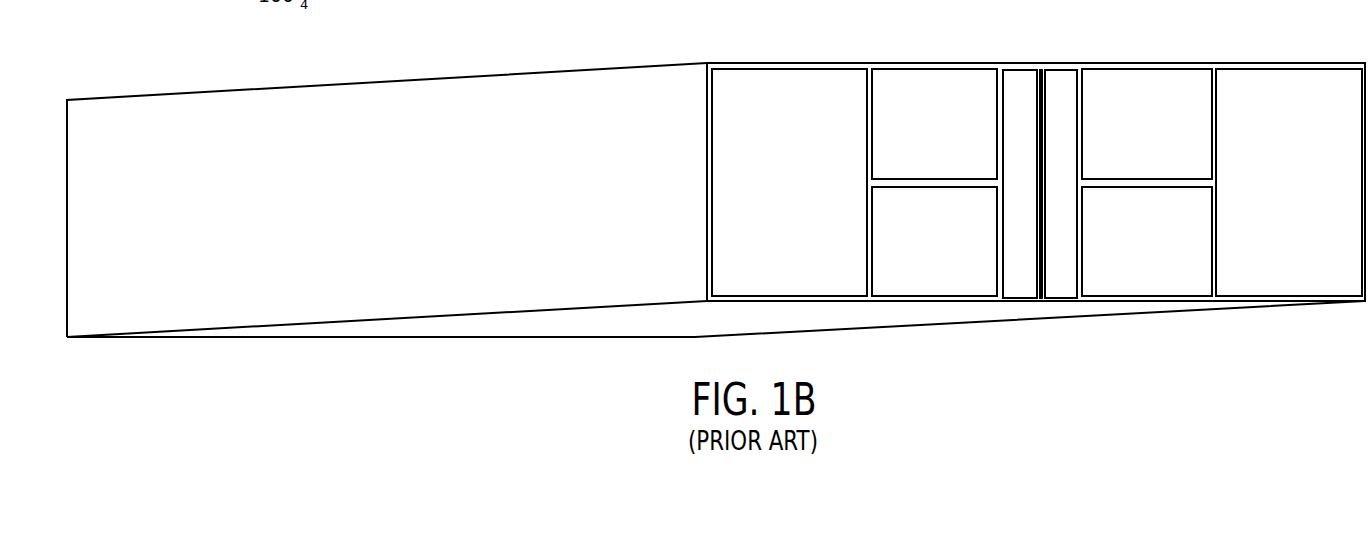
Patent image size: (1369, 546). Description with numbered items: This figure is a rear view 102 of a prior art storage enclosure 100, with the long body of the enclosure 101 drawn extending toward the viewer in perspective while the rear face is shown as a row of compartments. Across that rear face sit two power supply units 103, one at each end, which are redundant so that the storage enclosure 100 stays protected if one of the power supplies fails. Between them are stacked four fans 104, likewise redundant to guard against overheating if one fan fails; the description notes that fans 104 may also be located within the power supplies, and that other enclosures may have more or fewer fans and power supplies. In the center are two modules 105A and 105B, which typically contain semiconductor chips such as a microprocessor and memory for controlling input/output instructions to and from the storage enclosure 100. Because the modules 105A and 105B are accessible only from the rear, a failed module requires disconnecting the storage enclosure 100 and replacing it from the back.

The storage enclosure 100 is at (1273, 387).
The chassis body 101 is at (63, 347).
The rear view 102 is at (710, 55).
The power supply unit 103 is at (788, 275).
The fan 104 is at (927, 277).
The module 105A is at (1009, 277).
The module 105B is at (1058, 278).